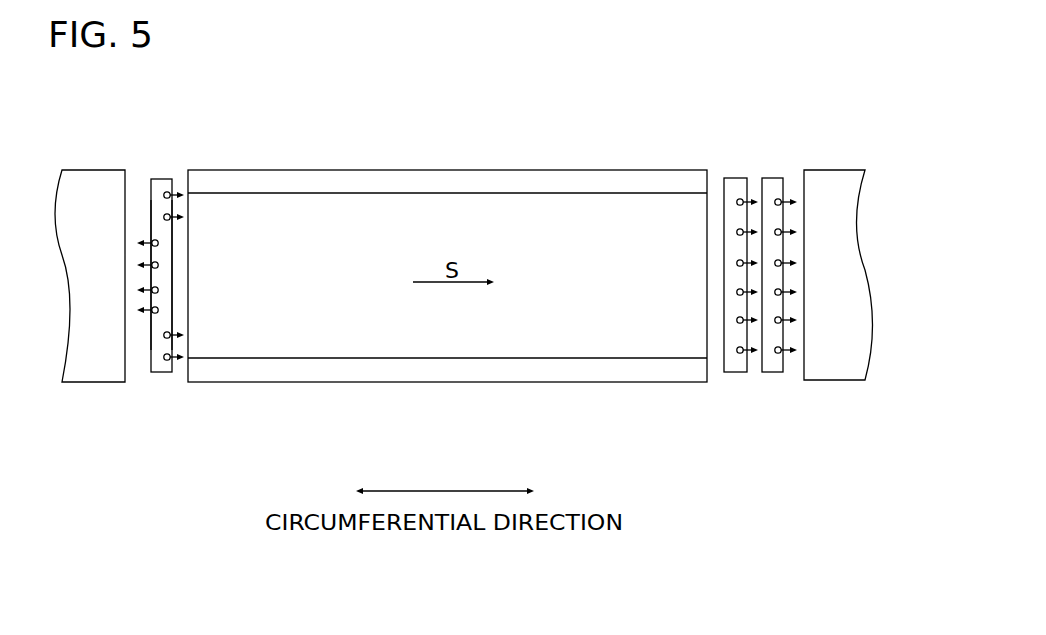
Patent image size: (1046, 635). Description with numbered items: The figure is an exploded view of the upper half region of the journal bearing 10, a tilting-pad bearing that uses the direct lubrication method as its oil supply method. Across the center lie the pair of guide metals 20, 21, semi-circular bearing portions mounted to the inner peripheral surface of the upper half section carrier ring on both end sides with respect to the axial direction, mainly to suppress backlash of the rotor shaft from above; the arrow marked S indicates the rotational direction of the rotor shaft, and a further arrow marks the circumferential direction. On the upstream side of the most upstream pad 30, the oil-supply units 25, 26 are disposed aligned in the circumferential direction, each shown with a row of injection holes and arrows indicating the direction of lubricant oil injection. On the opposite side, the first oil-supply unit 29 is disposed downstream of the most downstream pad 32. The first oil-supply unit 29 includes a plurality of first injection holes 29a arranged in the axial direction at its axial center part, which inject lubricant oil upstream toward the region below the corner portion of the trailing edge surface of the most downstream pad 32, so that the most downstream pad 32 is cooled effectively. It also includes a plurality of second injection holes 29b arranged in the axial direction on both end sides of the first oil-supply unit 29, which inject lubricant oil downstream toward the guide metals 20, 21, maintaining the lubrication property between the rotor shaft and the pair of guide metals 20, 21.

The journal bearing 10 is at (674, 98).
The guide metal 20 is at (480, 178).
The guide metal 21 is at (463, 382).
The oil-supply unit 25 is at (733, 178).
The oil-supply unit 26 is at (773, 178).
The first oil-supply unit 29 is at (163, 179).
The first injection hole 29a is at (150, 313).
The second injection hole 29b is at (168, 357).
The most upstream pad 30 is at (843, 380).
The most downstream pad 32 is at (90, 382).